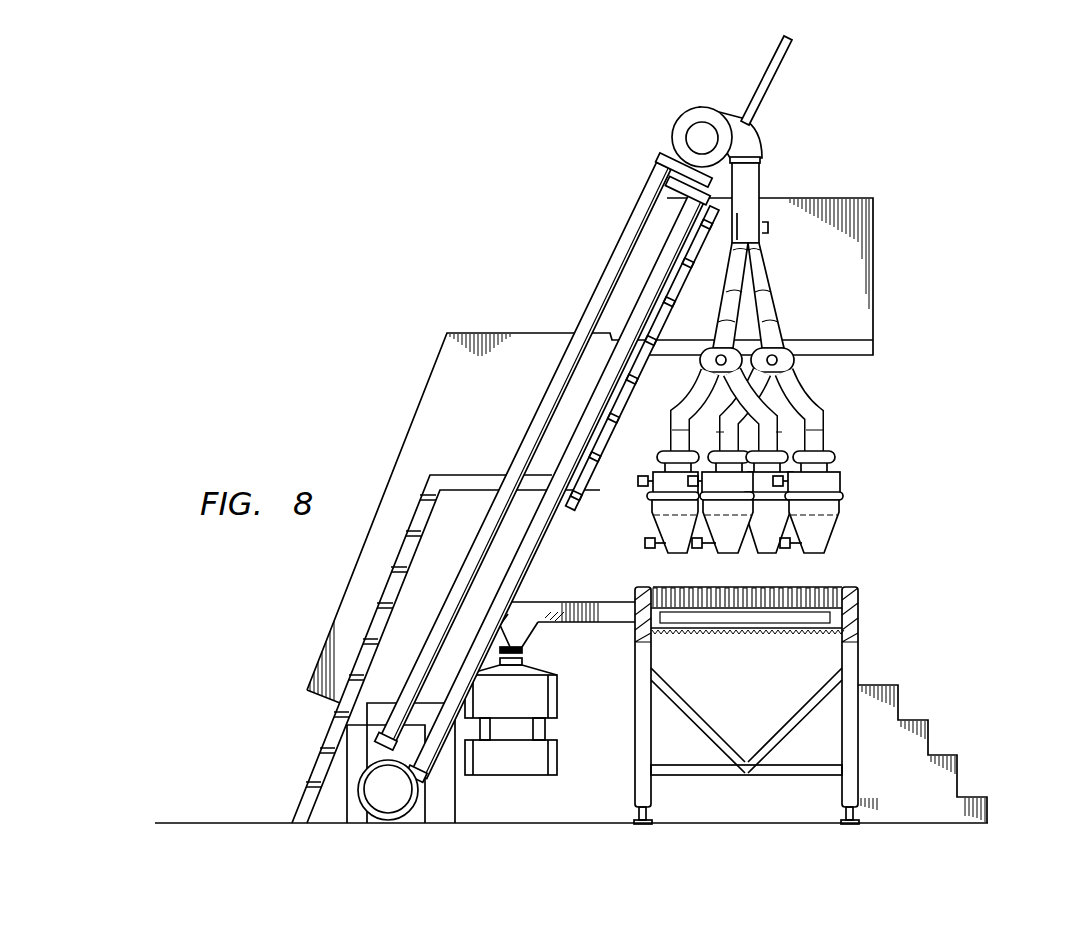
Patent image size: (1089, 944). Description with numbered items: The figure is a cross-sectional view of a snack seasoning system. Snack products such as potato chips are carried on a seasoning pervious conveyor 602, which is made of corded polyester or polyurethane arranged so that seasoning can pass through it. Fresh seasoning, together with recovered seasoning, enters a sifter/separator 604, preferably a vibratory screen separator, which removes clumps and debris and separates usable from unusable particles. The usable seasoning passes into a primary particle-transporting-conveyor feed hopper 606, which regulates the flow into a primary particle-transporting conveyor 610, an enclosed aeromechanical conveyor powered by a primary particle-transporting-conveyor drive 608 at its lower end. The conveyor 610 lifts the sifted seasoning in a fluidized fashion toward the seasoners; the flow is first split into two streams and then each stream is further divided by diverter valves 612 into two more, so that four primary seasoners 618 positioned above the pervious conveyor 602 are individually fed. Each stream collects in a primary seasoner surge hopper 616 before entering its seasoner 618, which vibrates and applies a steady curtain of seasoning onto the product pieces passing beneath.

The seasoning pervious conveyor 602 is at (830, 580).
The sifter/separator 604 is at (557, 700).
The primary particle-transporting-conveyor feed hopper 606 is at (457, 792).
The primary particle-transporting-conveyor drive 608 is at (355, 787).
The primary particle-transporting conveyor 610 is at (603, 275).
The diverter valve 612 is at (785, 238).
The primary seasoner surge hopper 616 is at (843, 481).
The primary seasoner 618 is at (843, 497).